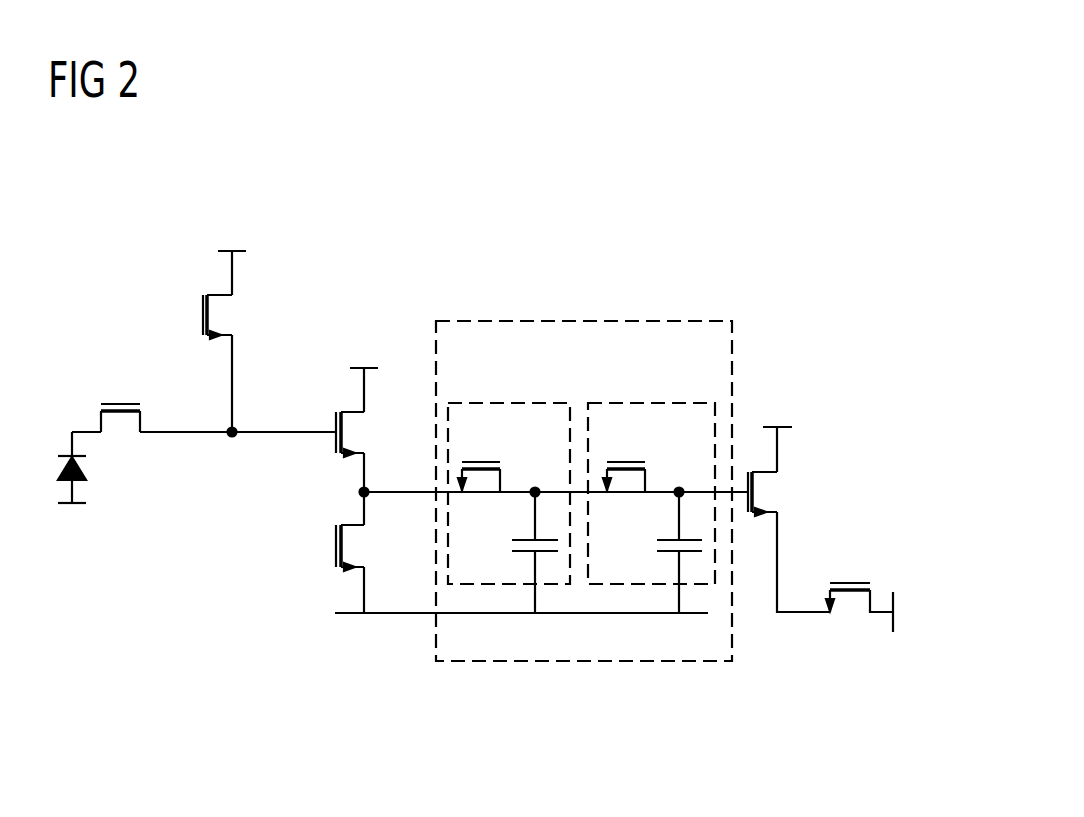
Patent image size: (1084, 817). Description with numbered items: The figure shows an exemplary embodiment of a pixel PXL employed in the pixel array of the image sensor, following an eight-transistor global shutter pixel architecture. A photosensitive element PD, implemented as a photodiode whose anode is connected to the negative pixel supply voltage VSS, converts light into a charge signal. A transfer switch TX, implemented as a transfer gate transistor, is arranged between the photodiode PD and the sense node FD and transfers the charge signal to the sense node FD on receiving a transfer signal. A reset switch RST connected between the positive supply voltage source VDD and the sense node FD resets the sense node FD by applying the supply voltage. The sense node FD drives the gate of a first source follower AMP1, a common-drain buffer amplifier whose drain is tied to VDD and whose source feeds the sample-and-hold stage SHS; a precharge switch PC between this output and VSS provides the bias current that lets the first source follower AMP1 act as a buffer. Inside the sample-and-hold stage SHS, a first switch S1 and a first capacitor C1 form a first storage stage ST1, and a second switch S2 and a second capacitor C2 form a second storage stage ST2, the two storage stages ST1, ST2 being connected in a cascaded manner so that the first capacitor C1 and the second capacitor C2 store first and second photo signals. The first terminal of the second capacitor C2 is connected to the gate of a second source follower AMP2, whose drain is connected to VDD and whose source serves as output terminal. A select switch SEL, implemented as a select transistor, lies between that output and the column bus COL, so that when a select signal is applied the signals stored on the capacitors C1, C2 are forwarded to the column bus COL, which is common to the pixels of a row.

The pixel PXL is at (121, 198).
The positive supply voltage source VDD is at (510, 343).
The reset switch RST is at (203, 315).
The transfer switch TX is at (120, 404).
The sense node FD is at (231, 452).
The photosensitive element PD is at (90, 467).
The negative pixel supply voltage VSS is at (378, 579).
The first source follower AMP1 is at (542, 468).
The precharge switch PC is at (336, 546).
The sample-and-hold stage SHS is at (497, 320).
The first storage stage ST1 is at (517, 402).
The second storage stage ST2 is at (660, 402).
The first switch S1 is at (480, 462).
The second switch S2 is at (625, 462).
The first capacitor C1 is at (519, 551).
The second capacitor C2 is at (662, 551).
The second source follower AMP2 is at (797, 542).
The select switch SEL is at (850, 583).
The column bus COL is at (920, 612).